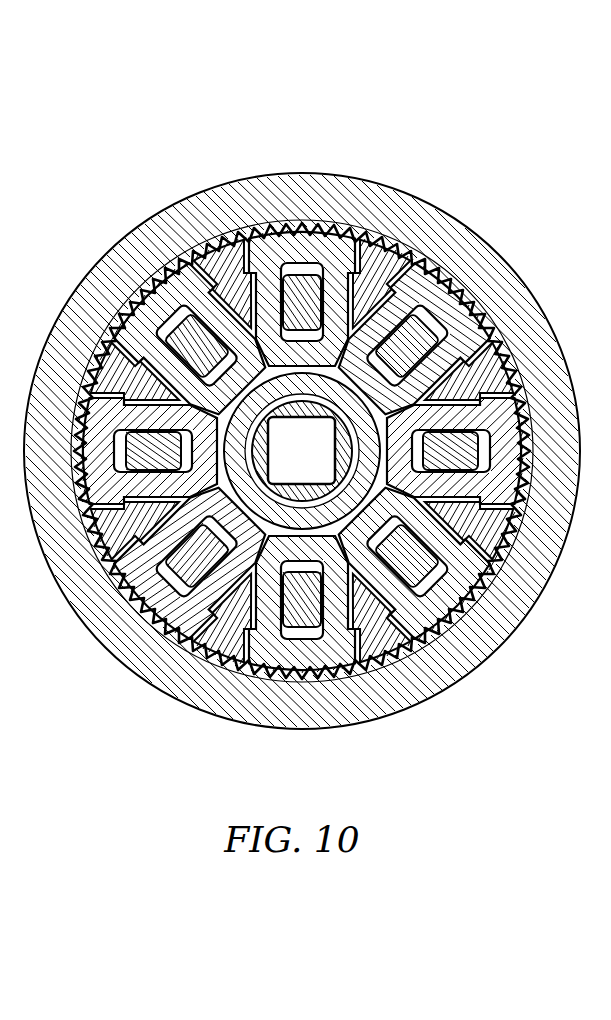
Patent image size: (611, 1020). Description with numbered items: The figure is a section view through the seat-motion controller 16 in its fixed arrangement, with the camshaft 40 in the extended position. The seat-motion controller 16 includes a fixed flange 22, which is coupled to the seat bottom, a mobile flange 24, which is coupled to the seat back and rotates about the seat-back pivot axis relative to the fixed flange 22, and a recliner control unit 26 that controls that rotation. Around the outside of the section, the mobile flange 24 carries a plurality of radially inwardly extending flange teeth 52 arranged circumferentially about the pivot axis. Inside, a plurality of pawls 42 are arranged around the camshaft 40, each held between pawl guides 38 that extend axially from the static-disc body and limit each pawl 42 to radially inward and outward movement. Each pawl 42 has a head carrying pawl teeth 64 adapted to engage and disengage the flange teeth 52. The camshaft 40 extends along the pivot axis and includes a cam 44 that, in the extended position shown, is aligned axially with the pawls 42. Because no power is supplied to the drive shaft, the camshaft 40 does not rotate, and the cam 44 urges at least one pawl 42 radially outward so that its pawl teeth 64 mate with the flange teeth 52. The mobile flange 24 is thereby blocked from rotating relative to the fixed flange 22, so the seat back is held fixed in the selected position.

The seat-motion controller 16 is at (112, 86).
The fixed flange 22 is at (372, 636).
The mobile flange 24 is at (114, 234).
The recliner control unit 26 is at (178, 503).
The pawl guides 38 is at (298, 630).
The camshaft 40 is at (336, 355).
The pawl 42 is at (487, 506).
The cam 44 is at (462, 560).
The flange teeth 52 is at (515, 370).
The pawl teeth 64 is at (490, 318).